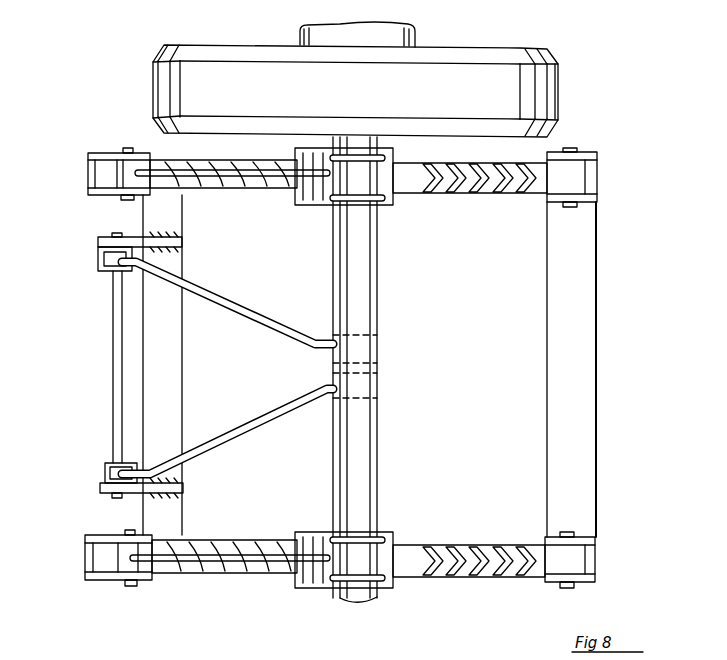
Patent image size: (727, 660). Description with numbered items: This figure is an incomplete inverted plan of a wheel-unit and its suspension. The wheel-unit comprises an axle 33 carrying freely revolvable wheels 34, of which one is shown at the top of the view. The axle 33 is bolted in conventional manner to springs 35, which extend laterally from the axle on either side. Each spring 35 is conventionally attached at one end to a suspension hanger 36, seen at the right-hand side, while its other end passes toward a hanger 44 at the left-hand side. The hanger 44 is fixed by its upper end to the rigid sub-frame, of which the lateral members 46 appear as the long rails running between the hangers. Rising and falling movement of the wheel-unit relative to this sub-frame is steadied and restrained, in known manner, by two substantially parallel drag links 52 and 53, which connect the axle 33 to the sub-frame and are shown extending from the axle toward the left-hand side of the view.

The axle 33 is at (376, 244).
The wheels 34 is at (559, 91).
The springs 35 is at (487, 181).
The suspension hangers 36 is at (584, 152).
The hanger 44 is at (105, 153).
The lateral members 46 is at (557, 303).
The drag link 52 is at (237, 303).
The drag link 53 is at (247, 189).